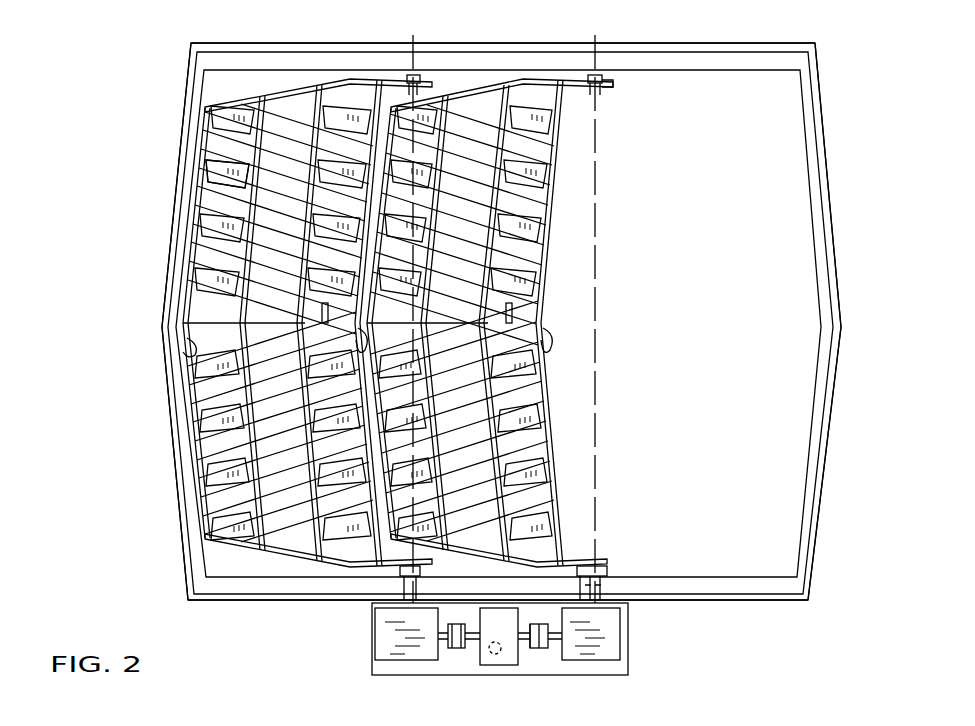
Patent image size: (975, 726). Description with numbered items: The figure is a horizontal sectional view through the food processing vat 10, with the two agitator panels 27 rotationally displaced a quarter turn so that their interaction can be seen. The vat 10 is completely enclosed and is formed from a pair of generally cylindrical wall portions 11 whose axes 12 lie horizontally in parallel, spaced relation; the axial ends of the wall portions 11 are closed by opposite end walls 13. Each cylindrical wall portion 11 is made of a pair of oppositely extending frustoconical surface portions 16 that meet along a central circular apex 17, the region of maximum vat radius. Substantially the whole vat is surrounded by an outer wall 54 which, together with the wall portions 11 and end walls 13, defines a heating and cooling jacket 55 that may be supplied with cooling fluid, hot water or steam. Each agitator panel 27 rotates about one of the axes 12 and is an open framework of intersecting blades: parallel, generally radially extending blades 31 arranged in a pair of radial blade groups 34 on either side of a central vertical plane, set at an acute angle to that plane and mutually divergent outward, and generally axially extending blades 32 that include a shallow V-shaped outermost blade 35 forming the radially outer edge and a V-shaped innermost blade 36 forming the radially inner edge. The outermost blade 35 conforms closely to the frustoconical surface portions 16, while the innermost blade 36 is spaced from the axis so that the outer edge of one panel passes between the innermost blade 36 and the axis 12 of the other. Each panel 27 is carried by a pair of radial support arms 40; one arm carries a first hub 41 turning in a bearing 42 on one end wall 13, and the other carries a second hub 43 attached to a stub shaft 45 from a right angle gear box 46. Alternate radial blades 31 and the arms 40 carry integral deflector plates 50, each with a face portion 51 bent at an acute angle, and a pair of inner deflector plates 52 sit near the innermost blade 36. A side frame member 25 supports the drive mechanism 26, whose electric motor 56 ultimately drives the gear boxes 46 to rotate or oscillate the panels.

The food processing vat 10 is at (170, 163).
The cylindrical wall portions 11 is at (178, 224).
The axes 12 is at (414, 50).
The end walls 13 is at (362, 43).
The frustoconical surface portions 16 is at (172, 360).
The central circular apex 17 is at (838, 328).
The side frame member 25 is at (372, 670).
The drive mechanism 26 is at (469, 653).
The agitator panels 27 is at (190, 462).
The radially extending blades 31 is at (540, 233).
The axially extending blades 32 is at (520, 185).
The radial blade groups 34 is at (520, 352).
The outermost blade 35 is at (192, 345).
The innermost blade 36 is at (358, 340).
The radial support arms 40 is at (285, 80).
The first hub 41 is at (608, 83).
The bearing 42 is at (598, 65).
The second hub 43 is at (600, 568).
The stub shaft 45 is at (602, 590).
The right angle gear box 46 is at (378, 637).
The deflector plates 50 is at (232, 290).
The face portion 51 is at (222, 222).
The inner deflector plates 52 is at (548, 125).
The outer wall 54 is at (185, 90).
The heating and cooling jacket 55 is at (822, 165).
The electric motor 56 is at (488, 652).